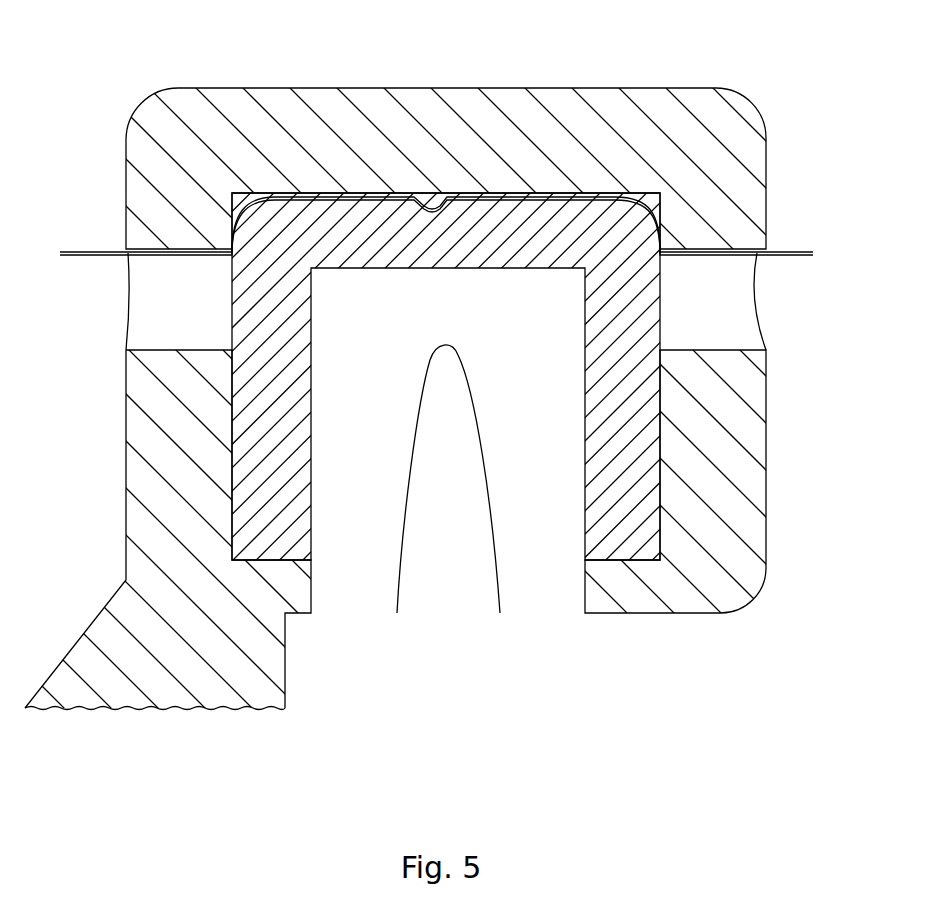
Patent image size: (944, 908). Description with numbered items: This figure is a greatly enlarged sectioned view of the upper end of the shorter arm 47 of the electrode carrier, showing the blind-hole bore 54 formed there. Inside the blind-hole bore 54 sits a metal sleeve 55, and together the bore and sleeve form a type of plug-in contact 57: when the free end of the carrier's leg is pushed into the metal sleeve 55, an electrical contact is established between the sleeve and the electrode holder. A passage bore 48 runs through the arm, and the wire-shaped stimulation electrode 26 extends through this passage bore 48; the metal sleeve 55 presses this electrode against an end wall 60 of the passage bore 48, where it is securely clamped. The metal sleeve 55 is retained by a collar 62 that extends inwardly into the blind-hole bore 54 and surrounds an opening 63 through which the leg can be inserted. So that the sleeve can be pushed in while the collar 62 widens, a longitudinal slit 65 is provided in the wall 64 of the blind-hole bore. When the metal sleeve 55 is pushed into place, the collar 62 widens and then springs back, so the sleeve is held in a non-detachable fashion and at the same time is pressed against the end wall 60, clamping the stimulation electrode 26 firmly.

The membrane 26 is at (80, 253).
The shorter arm 47 is at (197, 661).
The passage bore 48 is at (712, 312).
The blind-hole bore 54 is at (643, 388).
The metal sleeve 55 is at (613, 380).
The plug-in contact 57 is at (348, 555).
The end wall 60 is at (418, 200).
The collar 62 is at (608, 590).
The opening 63 is at (445, 541).
The wall 64 is at (368, 352).
The longitudinal slit 65 is at (455, 427).